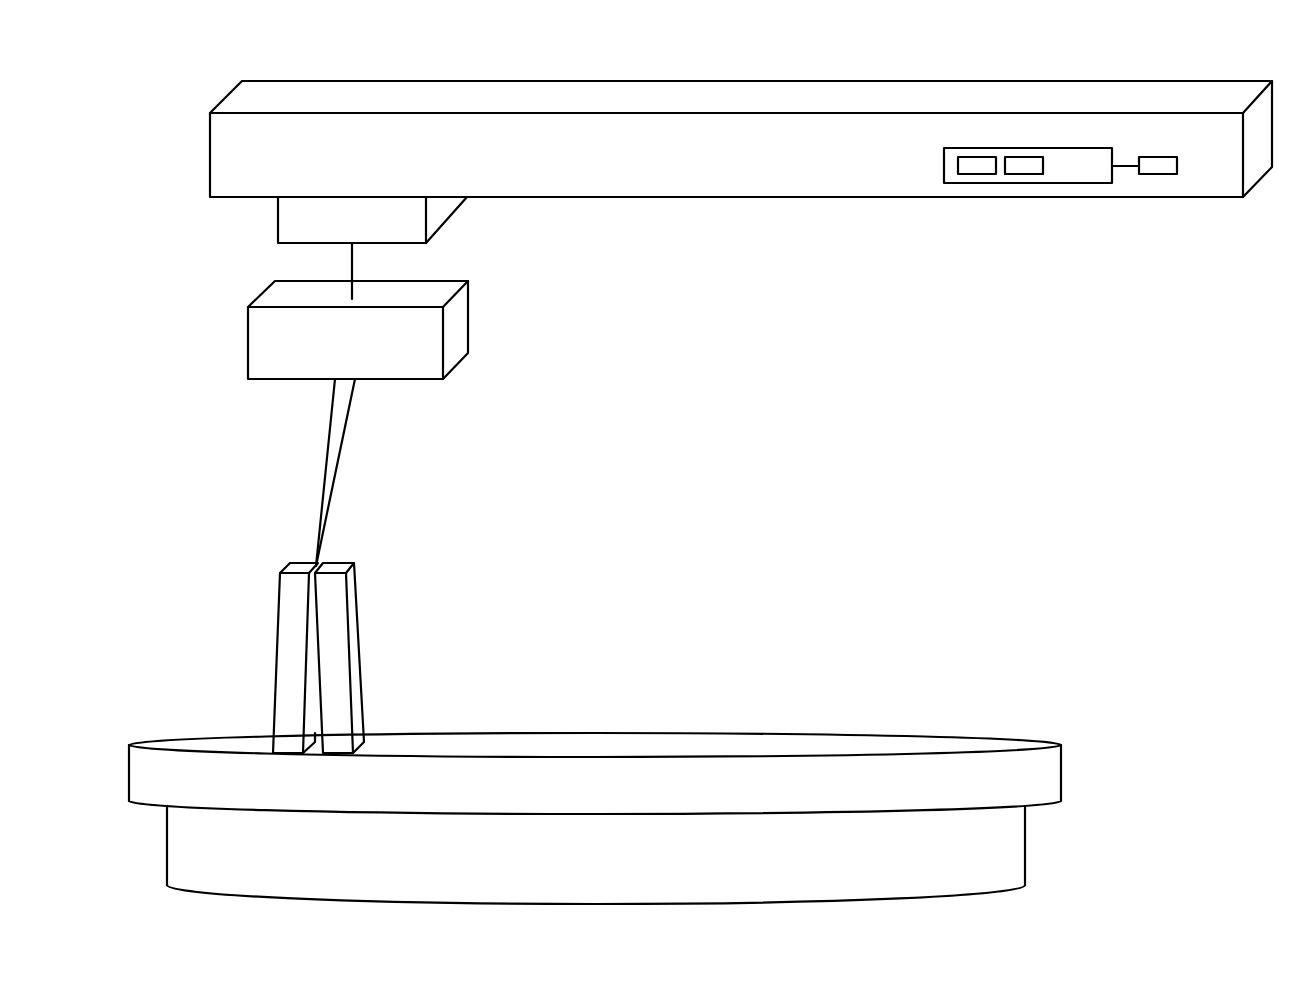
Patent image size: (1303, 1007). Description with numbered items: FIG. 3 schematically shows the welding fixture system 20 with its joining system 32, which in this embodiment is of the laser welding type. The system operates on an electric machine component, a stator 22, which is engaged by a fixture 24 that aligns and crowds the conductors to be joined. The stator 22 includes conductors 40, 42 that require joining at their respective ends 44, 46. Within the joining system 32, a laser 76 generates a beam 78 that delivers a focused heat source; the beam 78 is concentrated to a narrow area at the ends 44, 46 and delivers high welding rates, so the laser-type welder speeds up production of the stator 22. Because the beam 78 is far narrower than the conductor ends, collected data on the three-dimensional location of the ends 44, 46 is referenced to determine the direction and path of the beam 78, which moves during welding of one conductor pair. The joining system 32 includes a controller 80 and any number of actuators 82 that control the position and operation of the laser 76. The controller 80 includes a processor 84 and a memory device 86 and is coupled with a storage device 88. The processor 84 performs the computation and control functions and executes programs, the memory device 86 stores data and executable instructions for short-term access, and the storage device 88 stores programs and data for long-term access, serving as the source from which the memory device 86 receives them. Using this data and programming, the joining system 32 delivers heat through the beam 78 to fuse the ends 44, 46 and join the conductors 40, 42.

The welding fixture system 20 is at (1098, 60).
The stator 22 is at (1025, 847).
The fixture 24 is at (1061, 777).
The joining system 32 is at (815, 100).
The conductor 40 is at (295, 653).
The conductor 42 is at (337, 652).
The end 44 is at (300, 568).
The end 46 is at (335, 568).
The laser 76 is at (459, 323).
The beam 78 is at (336, 442).
The controller 80 is at (1080, 183).
The actuator 82 is at (438, 213).
The processor 84 is at (977, 183).
The memory device 86 is at (1024, 183).
The storage device 88 is at (1157, 174).